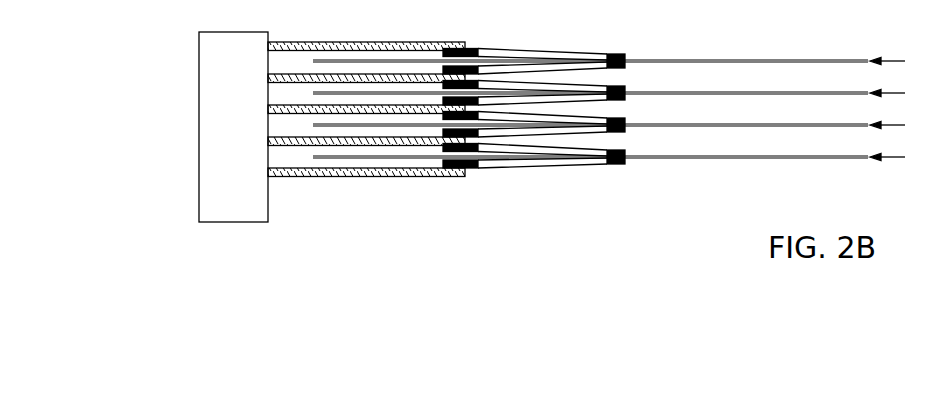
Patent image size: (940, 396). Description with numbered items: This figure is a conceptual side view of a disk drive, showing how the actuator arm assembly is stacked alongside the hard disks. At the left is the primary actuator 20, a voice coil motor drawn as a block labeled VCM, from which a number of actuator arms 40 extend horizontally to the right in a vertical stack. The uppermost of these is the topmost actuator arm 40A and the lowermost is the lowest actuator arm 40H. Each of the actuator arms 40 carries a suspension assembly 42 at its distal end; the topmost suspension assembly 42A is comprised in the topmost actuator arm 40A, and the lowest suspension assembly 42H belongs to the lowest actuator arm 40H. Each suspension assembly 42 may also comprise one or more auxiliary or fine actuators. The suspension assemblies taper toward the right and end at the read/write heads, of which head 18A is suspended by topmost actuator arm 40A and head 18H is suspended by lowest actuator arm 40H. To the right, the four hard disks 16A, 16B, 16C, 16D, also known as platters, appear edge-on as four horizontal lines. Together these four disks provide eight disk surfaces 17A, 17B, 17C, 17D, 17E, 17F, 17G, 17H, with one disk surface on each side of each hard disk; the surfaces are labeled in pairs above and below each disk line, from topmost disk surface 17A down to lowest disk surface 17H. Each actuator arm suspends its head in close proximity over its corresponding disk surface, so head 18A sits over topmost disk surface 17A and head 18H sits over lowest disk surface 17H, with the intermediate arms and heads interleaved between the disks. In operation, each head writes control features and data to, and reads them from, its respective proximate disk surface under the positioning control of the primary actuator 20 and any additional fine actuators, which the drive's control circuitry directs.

The primary actuator 20 is at (199, 70).
The actuator arms 40 is at (378, 203).
The topmost actuator arm 40A is at (388, 42).
The lowest actuator arm 40H is at (337, 178).
The suspension assembly 42 is at (536, 204).
The topmost suspension assembly 42A is at (561, 48).
The lowest suspension assembly 42H is at (560, 172).
The head 18A is at (629, 53).
The head 18H is at (629, 166).
The hard disk 16A is at (904, 61).
The hard disk 16B is at (904, 93).
The hard disk 16C is at (904, 125).
The hard disk 16D is at (904, 157).
The disk surface 17A is at (782, 60).
The disk surface 17B is at (766, 62).
The disk surface 17C is at (782, 92).
The disk surface 17D is at (766, 94).
The disk surface 17E is at (782, 124).
The disk surface 17F is at (766, 126).
The disk surface 17G is at (782, 156).
The disk surface 17H is at (766, 158).